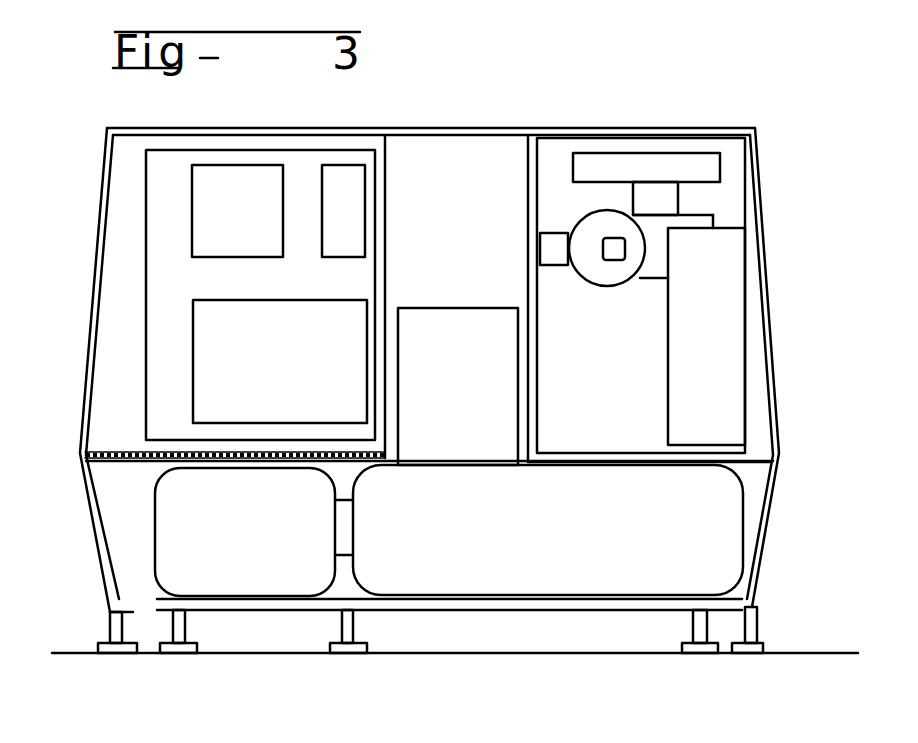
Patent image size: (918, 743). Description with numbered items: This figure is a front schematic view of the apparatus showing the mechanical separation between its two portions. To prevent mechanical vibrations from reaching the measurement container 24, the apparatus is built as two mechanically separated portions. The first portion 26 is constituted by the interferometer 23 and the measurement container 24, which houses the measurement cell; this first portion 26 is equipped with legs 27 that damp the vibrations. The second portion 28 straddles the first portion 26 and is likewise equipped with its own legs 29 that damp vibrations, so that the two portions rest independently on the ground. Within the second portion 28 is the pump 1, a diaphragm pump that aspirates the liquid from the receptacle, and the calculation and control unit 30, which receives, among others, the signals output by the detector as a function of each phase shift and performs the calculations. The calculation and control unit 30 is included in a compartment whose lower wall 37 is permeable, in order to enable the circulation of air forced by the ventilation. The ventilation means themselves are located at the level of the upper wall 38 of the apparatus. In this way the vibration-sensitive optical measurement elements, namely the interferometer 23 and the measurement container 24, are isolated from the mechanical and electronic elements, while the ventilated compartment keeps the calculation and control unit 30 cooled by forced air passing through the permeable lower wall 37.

The pump 1 is at (692, 225).
The interferometer 23 is at (705, 548).
The measurement container 24 is at (438, 320).
The first portion 26 is at (497, 613).
The legs 27 is at (190, 652).
The second portion 28 is at (102, 181).
The legs 29 is at (110, 640).
The calculation and control unit 30 is at (143, 193).
The lower wall 37 is at (130, 452).
The upper wall 38 is at (240, 129).